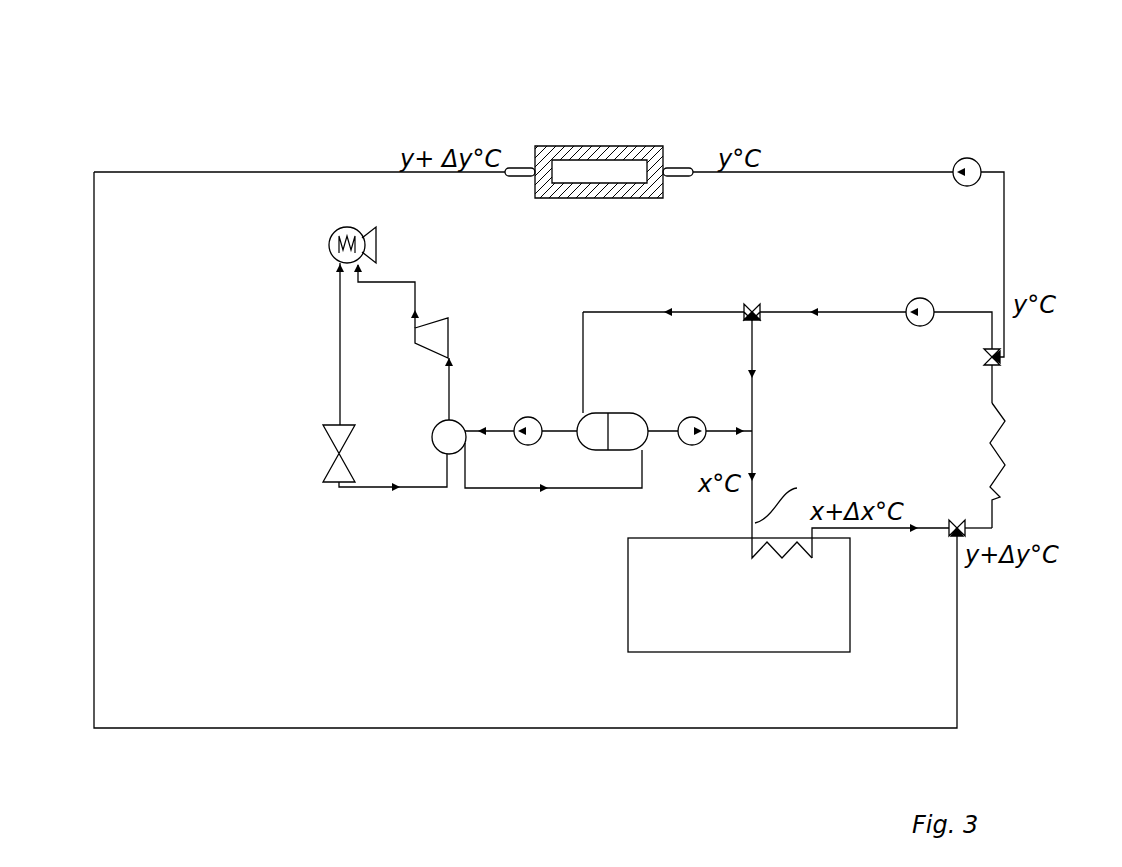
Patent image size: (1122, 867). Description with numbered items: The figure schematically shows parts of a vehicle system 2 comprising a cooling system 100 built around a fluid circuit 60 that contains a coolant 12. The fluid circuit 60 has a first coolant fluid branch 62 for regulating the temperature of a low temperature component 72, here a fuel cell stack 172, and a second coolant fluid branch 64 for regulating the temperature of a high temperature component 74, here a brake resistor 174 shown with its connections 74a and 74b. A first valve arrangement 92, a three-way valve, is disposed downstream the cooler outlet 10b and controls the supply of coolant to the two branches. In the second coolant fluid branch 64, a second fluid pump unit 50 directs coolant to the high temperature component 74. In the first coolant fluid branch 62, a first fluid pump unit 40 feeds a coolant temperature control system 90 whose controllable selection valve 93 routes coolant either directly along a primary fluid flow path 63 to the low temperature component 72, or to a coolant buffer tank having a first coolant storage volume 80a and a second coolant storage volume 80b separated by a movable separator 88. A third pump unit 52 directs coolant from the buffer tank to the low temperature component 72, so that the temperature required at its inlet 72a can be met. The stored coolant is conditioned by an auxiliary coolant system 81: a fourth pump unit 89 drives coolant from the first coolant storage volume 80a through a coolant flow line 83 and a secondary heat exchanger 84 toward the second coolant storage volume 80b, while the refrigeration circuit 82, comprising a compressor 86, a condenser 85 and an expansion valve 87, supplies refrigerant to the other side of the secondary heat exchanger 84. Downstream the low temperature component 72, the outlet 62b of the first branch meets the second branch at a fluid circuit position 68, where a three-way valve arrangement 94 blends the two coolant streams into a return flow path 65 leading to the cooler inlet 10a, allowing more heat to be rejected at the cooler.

The system 2 is at (276, 80).
The cooling system 100 is at (166, 127).
The fluid circuit 60 is at (582, 409).
The second coolant fluid branch 64 is at (1004, 213).
The high temperature component 74 is at (605, 134).
The brake resistor 174 is at (600, 146).
The heat exchanger outlet 74a is at (680, 168).
The heat exchanger inlet 74b is at (522, 168).
The second fluid pump unit 50 is at (968, 158).
The condenser 85 is at (336, 232).
The compressor 86 is at (435, 318).
The movable separator 88 is at (340, 293).
The refrigeration circuit 82 is at (328, 406).
The expansion valve 87 is at (310, 455).
The auxiliary coolant system 81 is at (310, 538).
The secondary heat exchanger 84 is at (452, 455).
The coolant flow line 83 is at (493, 430).
The fourth pump unit 89 is at (518, 422).
The first coolant storage volume 80a is at (592, 421).
The second coolant storage volume 80b is at (622, 421).
The third pump unit 52 is at (692, 418).
The primary fluid flow path 63 is at (752, 405).
The coolant temperature control system 90 is at (652, 288).
The controllable selection valve 93 is at (755, 305).
The first coolant fluid branch 62 is at (845, 312).
The first fluid pump unit 40 is at (930, 302).
The first valve arrangement 92 is at (1002, 362).
The coolant 12 is at (1004, 345).
The outlet of the cooler 10b is at (992, 398).
The valve arrangement 94 is at (970, 512).
The inlet of the cooler 10a is at (993, 500).
The return flow path 65 is at (993, 510).
The fluid circuit position 68 is at (957, 520).
The outlet of the first coolant fluid branch 62b is at (930, 530).
The low temperature component 72 is at (671, 606).
The fuel cell stack 172 is at (628, 625).
The inlet of the low temperature component 72a is at (752, 537).